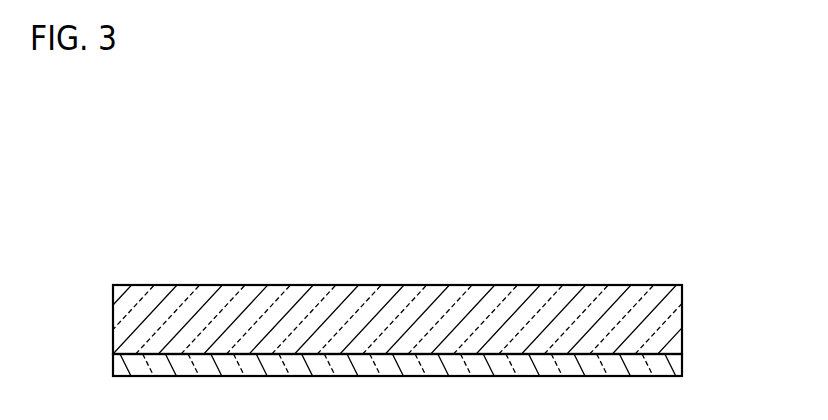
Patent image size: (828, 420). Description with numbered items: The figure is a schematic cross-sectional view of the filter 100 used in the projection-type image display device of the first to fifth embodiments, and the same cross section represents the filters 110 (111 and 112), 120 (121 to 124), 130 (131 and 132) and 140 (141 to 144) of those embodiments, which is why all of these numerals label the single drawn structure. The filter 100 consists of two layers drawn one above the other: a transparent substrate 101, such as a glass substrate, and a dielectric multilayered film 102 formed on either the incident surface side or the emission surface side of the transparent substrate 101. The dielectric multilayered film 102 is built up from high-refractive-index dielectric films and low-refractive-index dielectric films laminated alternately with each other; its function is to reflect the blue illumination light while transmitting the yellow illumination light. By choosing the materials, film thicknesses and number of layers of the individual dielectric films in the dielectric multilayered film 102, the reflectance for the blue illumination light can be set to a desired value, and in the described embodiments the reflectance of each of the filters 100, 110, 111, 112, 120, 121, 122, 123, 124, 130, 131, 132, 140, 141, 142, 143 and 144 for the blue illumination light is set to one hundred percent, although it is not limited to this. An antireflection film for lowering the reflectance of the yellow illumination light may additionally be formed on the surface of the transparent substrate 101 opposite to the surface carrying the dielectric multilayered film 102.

The filter 100 is at (442, 213).
The filter 110 is at (429, 332).
The filter 111 is at (429, 332).
The filter 112 is at (429, 332).
The filter 120 is at (429, 332).
The filter 121 is at (429, 332).
The filter 122 is at (429, 332).
The filter 123 is at (429, 332).
The filter 124 is at (429, 332).
The filter 130 is at (429, 332).
The filter 131 is at (429, 332).
The filter 132 is at (429, 332).
The filter 140 is at (429, 332).
The filter 141 is at (429, 332).
The filter 142 is at (429, 332).
The filter 143 is at (429, 332).
The filter 144 is at (429, 332).
The transparent substrate 101 is at (672, 325).
The dielectric multilayered film 102 is at (672, 372).